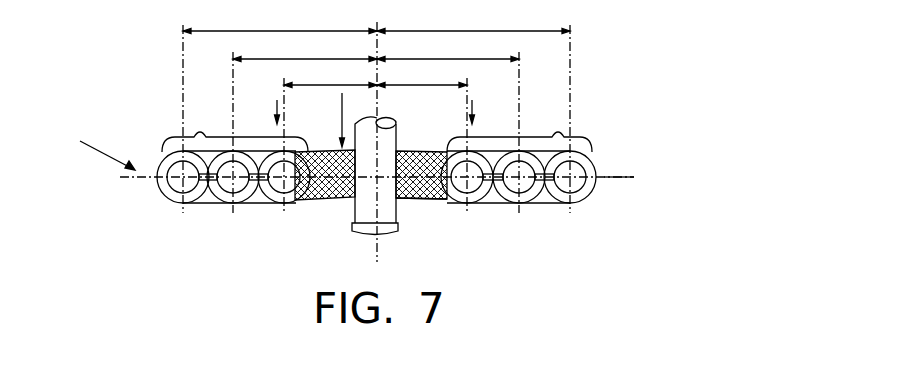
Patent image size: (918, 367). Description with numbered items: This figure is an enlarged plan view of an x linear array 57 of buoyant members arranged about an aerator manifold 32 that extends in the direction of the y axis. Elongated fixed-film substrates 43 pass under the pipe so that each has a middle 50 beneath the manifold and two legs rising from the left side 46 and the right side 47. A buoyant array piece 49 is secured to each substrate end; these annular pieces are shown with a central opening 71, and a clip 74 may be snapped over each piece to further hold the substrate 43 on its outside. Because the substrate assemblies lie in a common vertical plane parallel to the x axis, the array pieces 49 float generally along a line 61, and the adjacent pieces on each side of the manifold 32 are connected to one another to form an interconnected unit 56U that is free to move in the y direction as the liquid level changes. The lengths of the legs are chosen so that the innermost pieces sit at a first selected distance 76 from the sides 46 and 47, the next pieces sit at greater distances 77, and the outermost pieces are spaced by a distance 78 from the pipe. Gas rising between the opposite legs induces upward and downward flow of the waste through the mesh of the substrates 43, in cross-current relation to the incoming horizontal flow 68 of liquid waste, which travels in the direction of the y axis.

The aerator manifold 32 is at (386, 120).
The elongated fixed-film substrate 43 is at (410, 153).
The left side 46 is at (277, 100).
The right side 47 is at (472, 100).
The buoyant array piece 49 is at (622, 134).
The middle 50 is at (342, 203).
The interconnected unit 56U is at (200, 130).
The x linear array 57 is at (91, 149).
The line 61 is at (615, 181).
The incoming horizontal flow 68 is at (342, 112).
The opening 71 is at (455, 200).
The clip 74 is at (168, 163).
The first selected distance 76 is at (322, 84).
The distance 77 is at (282, 58).
The distance 78 is at (273, 30).